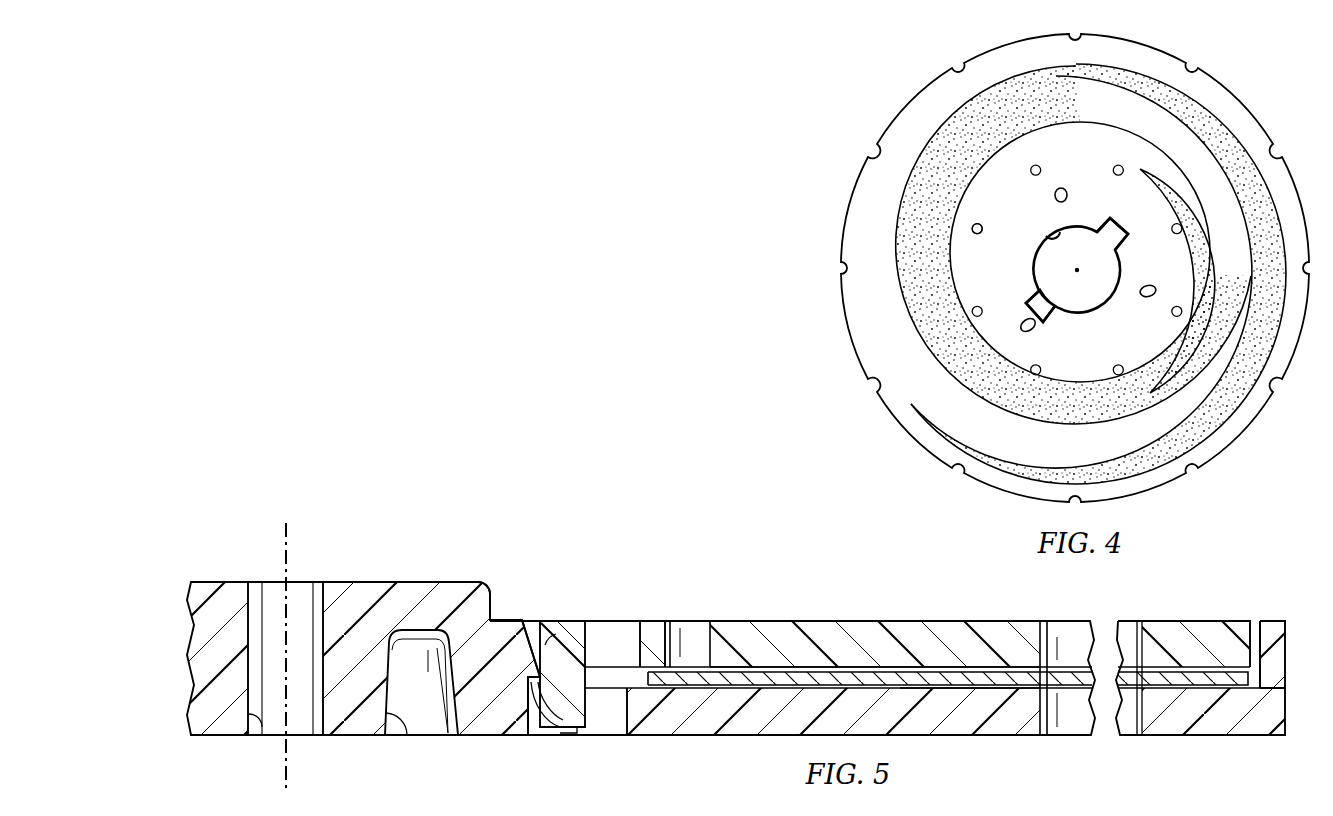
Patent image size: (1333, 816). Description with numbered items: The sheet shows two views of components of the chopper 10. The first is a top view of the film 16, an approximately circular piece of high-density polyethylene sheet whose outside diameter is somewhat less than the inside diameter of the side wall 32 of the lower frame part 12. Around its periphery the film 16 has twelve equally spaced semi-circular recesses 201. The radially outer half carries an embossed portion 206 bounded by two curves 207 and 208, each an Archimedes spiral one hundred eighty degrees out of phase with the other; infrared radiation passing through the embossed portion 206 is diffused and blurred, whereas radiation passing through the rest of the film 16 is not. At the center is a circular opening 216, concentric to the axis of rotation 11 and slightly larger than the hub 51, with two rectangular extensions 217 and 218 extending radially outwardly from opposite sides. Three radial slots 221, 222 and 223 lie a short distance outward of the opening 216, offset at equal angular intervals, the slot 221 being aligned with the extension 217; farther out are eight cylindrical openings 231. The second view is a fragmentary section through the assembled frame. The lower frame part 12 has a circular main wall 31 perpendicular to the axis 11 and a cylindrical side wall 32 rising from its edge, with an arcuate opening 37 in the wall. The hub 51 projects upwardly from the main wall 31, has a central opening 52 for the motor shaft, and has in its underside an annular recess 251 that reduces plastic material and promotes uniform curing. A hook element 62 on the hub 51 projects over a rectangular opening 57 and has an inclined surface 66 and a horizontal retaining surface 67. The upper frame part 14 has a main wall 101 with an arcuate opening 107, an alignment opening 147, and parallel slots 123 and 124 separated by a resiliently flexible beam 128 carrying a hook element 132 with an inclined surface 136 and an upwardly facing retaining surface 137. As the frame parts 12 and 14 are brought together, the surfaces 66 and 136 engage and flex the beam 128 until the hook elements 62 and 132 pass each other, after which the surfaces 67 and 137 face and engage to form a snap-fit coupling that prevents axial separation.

In FIG. 5, the chopper 10 is at (401, 479).
In FIG. 4, the axis of rotation 11 is at (1042, 258).
In FIG. 5, the axis of rotation 11 is at (283, 537).
In FIG. 5, the lower frame part 12 is at (700, 736).
In FIG. 5, the upper frame part 14 is at (910, 622).
In FIG. 4, the film 16 is at (853, 206).
In FIG. 5, the film 16 is at (990, 690).
In FIG. 5, the main wall 31 is at (955, 738).
In FIG. 5, the side wall 32 is at (1255, 738).
In FIG. 5, the opening 37 is at (1048, 736).
In FIG. 5, the hub 51 is at (364, 582).
In FIG. 5, the central cylindrical opening 52 is at (263, 736).
In FIG. 5, the opening 57 is at (623, 729).
In FIG. 5, the hook element 62 is at (492, 603).
In FIG. 5, the inclined side surface 66 is at (534, 662).
In FIG. 5, the retaining surface 67 is at (495, 668).
In FIG. 5, the main wall 101 is at (823, 621).
In FIG. 5, the opening 107 is at (1052, 636).
In FIG. 5, the slot 123 is at (547, 640).
In FIG. 5, the slot 124 is at (634, 642).
In FIG. 5, the beam 128 is at (575, 620).
In FIG. 5, the hook element 132 is at (578, 731).
In FIG. 5, the inclined side surface 136 is at (538, 728).
In FIG. 5, the retaining surface 137 is at (561, 734).
In FIG. 5, the alignment opening 147 is at (706, 630).
In FIG. 4, the recess 201 is at (1283, 151).
In FIG. 4, the embossed portion 206 is at (1043, 406).
In FIG. 4, the curve 207 is at (1079, 126).
In FIG. 4, the curve 208 is at (885, 258).
In FIG. 4, the opening 216 is at (1055, 233).
In FIG. 4, the extension 217 is at (1060, 306).
In FIG. 4, the extension 218 is at (1130, 236).
In FIG. 4, the slot 221 is at (1036, 333).
In FIG. 4, the slot 222 is at (1068, 196).
In FIG. 4, the slot 223 is at (1148, 298).
In FIG. 4, the cylindrical opening 231 is at (978, 235).
In FIG. 5, the annular recess 251 is at (403, 736).